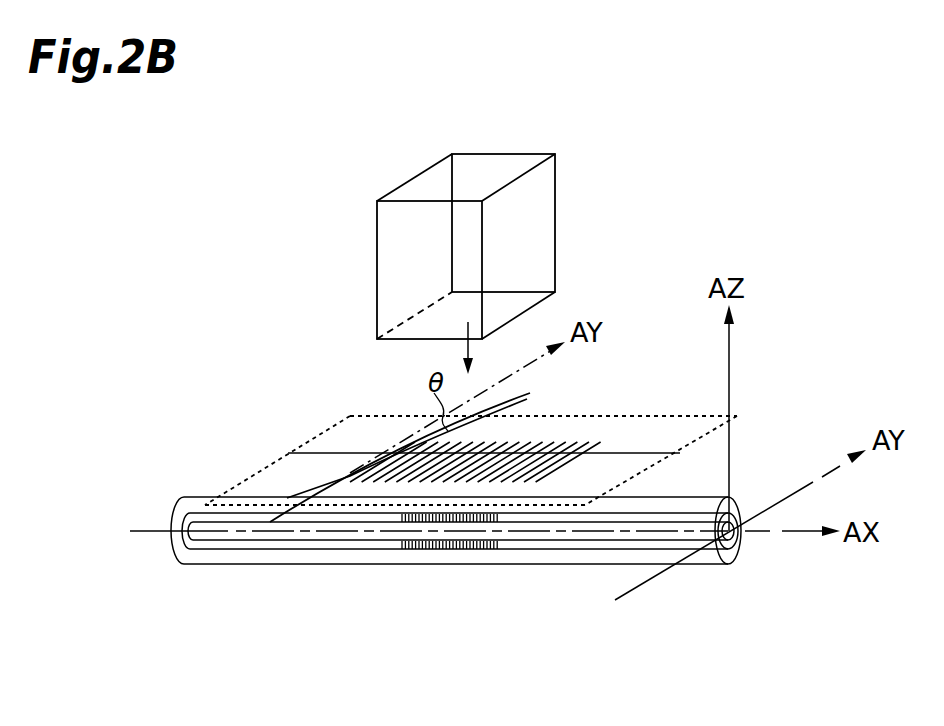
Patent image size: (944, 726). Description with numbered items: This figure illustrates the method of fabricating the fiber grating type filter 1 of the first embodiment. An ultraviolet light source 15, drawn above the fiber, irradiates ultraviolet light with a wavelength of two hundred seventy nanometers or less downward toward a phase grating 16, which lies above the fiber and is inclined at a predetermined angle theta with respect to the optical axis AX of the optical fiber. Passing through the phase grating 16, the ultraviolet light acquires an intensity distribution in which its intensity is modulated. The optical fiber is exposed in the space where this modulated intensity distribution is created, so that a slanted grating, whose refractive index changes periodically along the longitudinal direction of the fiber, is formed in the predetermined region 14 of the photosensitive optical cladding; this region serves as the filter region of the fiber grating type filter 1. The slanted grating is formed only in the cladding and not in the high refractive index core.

The fiber grating type filter 1 is at (698, 614).
The predetermined region 14 is at (498, 553).
The ultraviolet light source 15 is at (537, 248).
The phase grating 16 is at (599, 451).